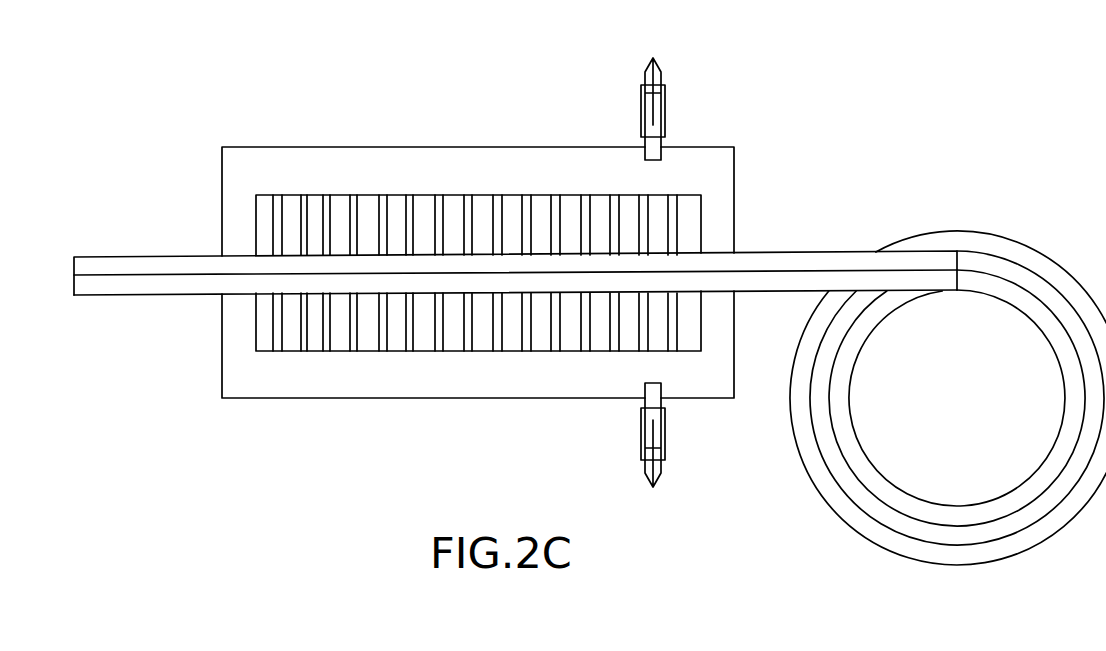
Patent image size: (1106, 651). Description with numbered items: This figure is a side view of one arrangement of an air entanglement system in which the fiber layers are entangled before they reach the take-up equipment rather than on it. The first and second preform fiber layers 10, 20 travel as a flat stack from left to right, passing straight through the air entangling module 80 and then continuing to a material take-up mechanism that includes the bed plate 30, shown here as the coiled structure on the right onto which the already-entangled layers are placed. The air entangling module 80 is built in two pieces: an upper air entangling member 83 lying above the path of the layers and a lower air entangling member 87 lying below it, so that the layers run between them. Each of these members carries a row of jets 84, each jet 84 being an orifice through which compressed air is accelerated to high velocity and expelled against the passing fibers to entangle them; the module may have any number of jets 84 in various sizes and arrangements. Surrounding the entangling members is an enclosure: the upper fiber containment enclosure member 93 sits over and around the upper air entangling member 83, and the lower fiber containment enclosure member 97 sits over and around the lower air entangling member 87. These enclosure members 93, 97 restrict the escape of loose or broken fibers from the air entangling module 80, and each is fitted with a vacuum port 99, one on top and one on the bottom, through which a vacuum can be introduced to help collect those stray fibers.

The elongated tubular member 10 is at (92, 267).
The inner tubular member 20 is at (93, 288).
The bed plate 30 is at (968, 231).
The air entangling module 80 is at (540, 104).
The upper air entangling member 83 is at (688, 223).
The jets 84 is at (328, 196).
The lower air entangling member 87 is at (264, 334).
The upper fiber containment enclosure member 93 is at (428, 167).
The lower fiber containment enclosure member 97 is at (236, 382).
The vacuum port 99 is at (657, 110).